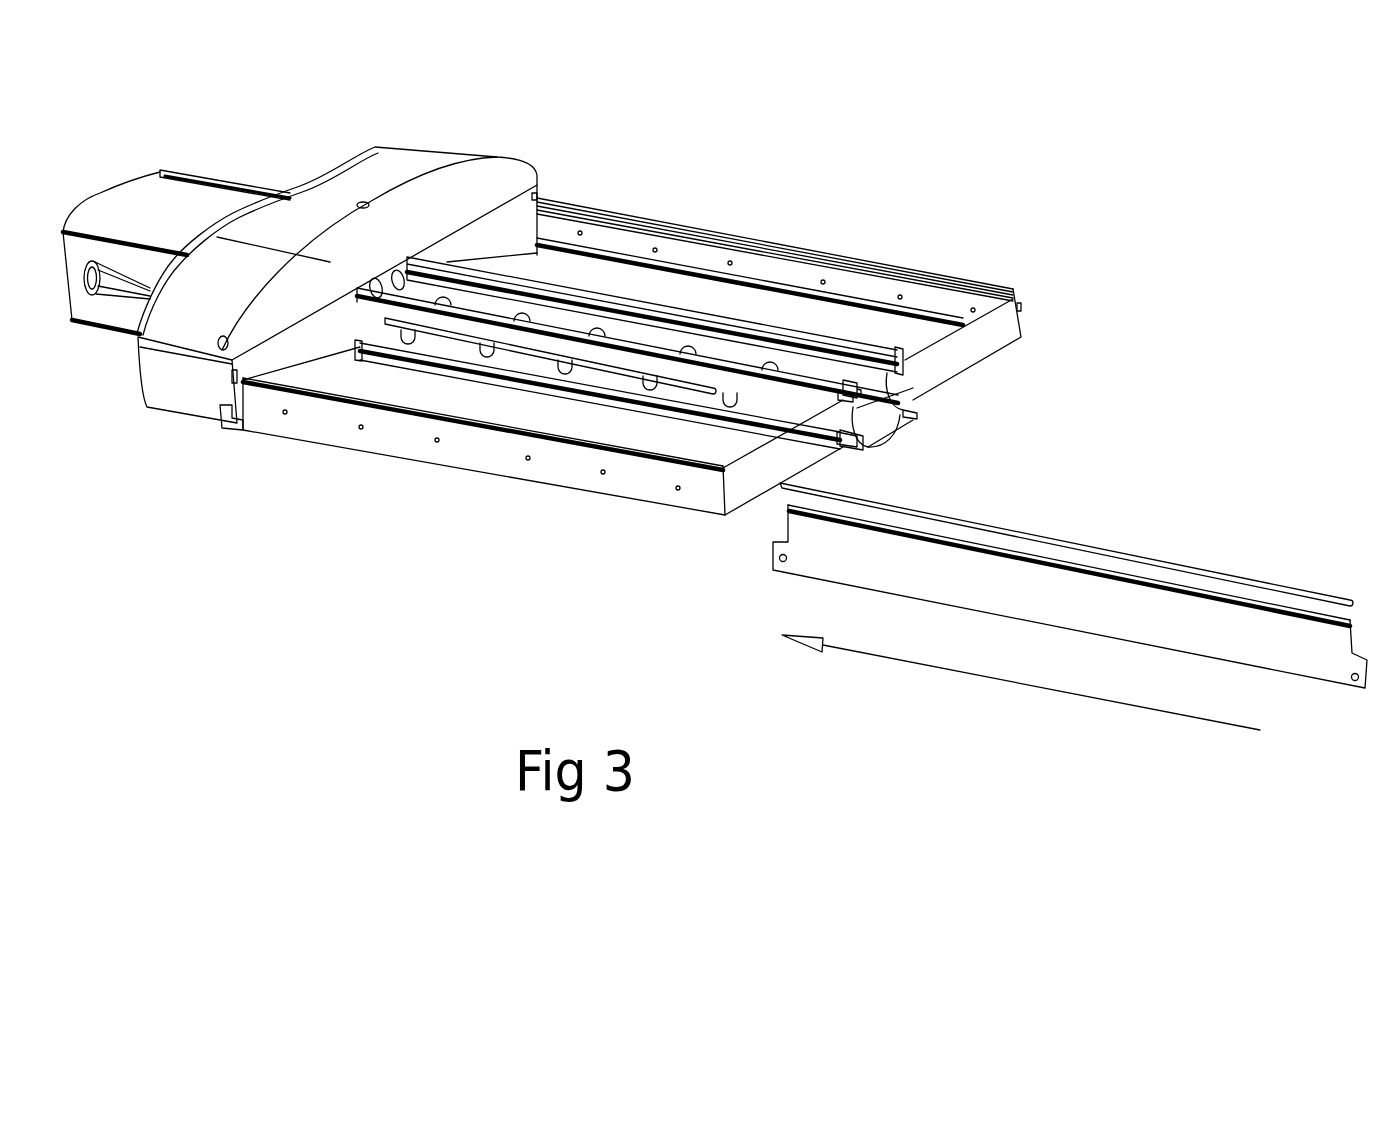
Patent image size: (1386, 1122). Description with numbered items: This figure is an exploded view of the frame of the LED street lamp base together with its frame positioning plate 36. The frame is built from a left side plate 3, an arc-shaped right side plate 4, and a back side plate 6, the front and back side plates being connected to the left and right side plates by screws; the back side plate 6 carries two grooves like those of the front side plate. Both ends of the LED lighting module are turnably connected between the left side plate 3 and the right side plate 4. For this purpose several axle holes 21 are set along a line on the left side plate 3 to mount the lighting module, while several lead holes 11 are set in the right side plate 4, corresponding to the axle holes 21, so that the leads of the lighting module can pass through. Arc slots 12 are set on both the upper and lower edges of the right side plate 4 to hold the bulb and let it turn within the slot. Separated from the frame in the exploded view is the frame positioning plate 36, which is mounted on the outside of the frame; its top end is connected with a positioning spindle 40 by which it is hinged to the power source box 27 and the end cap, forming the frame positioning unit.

The power source box 27 is at (188, 387).
The left side plate 3 is at (327, 420).
The axle holes 21 is at (437, 442).
The right side plate 4 is at (593, 373).
The lead holes 11 is at (413, 347).
The arc slots 12 is at (482, 368).
The back side plate 6 is at (745, 490).
The positioning spindle 40 is at (1168, 563).
The frame positioning plate 36 is at (1272, 642).